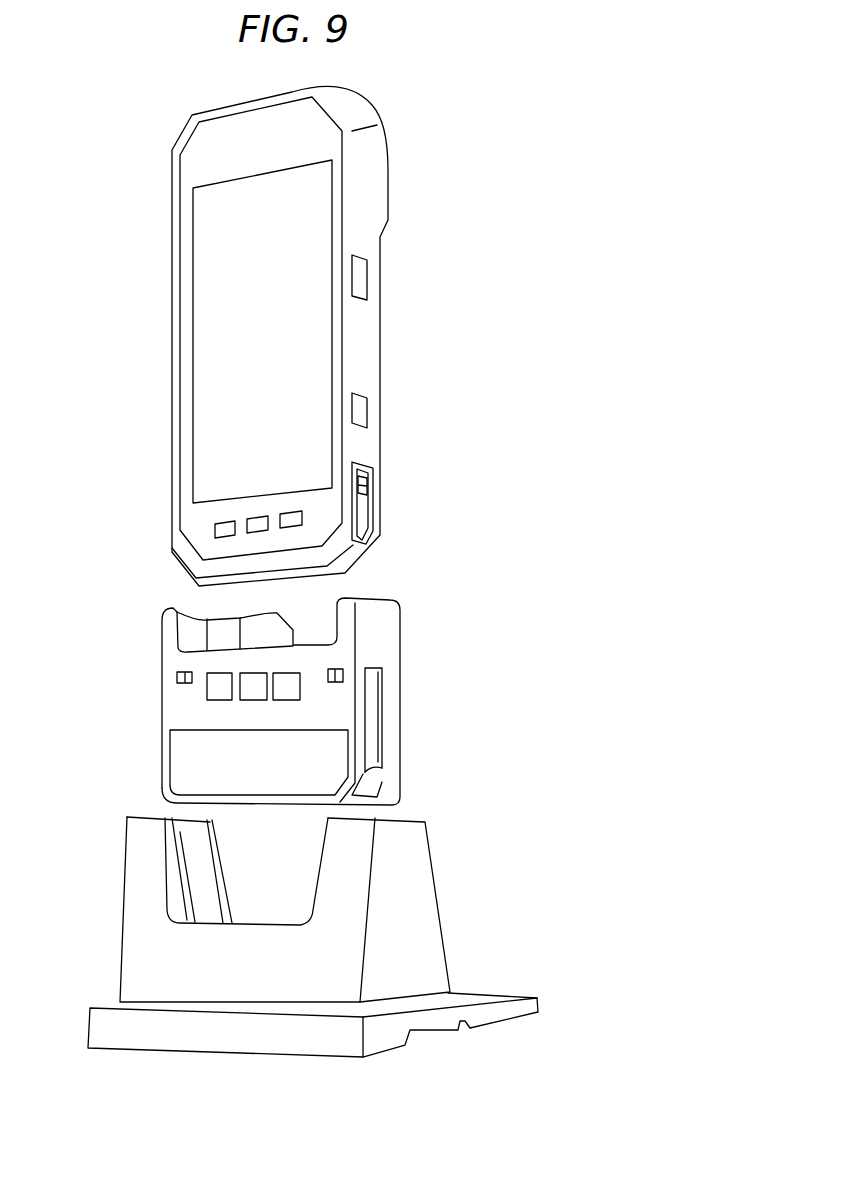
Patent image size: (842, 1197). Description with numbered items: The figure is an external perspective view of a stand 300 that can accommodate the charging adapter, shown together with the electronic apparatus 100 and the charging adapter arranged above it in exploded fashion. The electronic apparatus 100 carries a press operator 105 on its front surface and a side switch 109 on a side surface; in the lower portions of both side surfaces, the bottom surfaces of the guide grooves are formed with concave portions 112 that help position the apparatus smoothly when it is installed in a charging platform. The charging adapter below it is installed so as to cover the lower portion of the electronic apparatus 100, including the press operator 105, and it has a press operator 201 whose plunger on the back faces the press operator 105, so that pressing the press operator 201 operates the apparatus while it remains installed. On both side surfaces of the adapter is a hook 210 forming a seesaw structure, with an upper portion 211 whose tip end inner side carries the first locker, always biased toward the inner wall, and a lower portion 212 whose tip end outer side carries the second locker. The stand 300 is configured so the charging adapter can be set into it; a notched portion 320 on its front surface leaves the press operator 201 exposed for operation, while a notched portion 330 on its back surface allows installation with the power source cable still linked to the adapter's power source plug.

The electronic apparatus 100 is at (307, 132).
The press operator 105 is at (216, 529).
The side switch 109 is at (360, 279).
The concave portions 112 is at (373, 490).
The press operator 201 is at (216, 688).
The hook 210 is at (383, 668).
The upper portion 211 is at (378, 690).
The lower portion 212 is at (378, 752).
The stand 300 is at (410, 872).
The notched portion 320 is at (167, 865).
The notched portion 330 is at (219, 863).